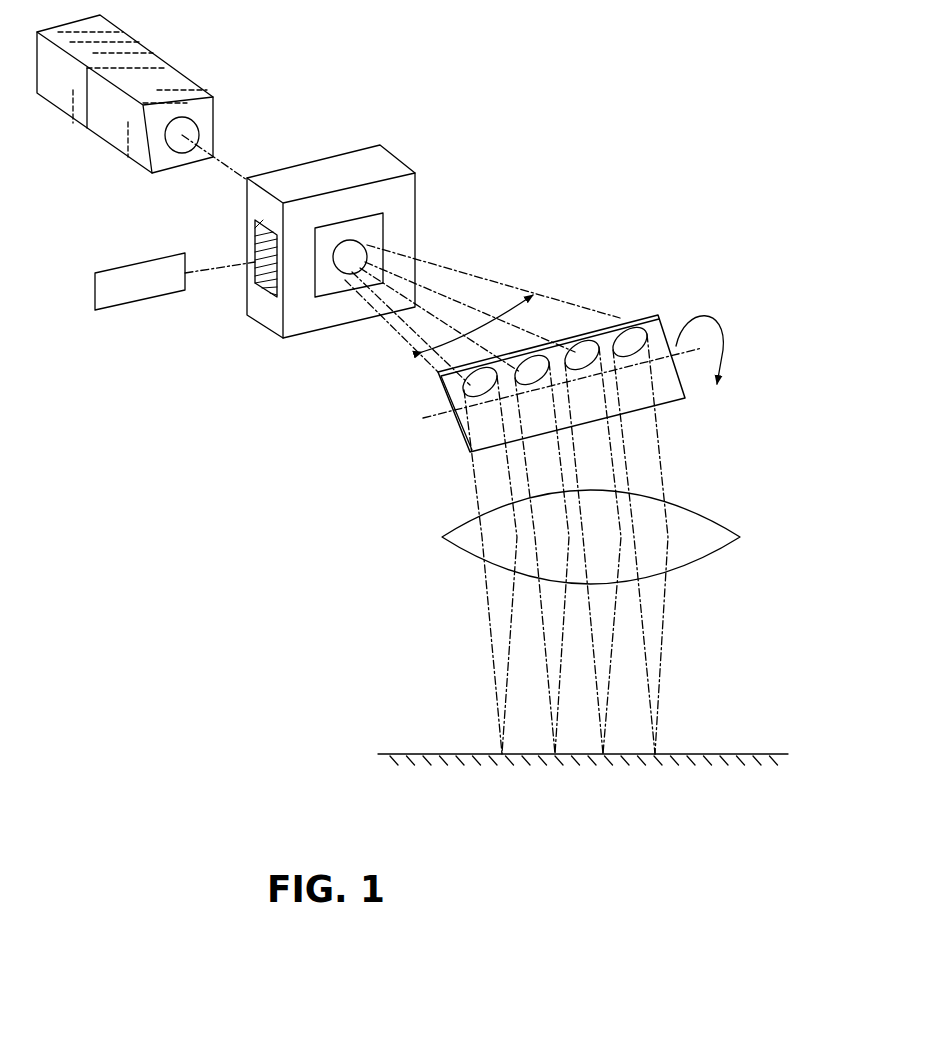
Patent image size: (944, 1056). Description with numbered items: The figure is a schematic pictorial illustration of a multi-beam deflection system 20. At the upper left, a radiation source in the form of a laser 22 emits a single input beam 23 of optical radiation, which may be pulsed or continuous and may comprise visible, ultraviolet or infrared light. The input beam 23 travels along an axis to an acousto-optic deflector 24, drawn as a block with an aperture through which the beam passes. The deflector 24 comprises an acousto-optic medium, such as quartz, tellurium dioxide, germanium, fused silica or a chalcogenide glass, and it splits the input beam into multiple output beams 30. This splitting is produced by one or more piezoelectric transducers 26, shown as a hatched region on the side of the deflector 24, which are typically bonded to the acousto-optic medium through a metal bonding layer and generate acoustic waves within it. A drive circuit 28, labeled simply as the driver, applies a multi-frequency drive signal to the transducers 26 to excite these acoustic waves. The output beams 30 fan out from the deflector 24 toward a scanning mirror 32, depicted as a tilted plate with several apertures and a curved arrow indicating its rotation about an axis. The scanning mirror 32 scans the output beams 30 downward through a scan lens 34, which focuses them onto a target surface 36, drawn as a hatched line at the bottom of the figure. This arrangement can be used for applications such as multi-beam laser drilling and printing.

The multi-beam deflection system 20 is at (509, 106).
The laser 22 is at (157, 67).
The input beam 23 is at (228, 168).
The acousto-optic deflector 24 is at (385, 167).
The piezoelectric transducers 26 is at (265, 285).
The drive circuit 28 is at (123, 305).
The output beams 30 is at (437, 328).
The scanning mirror 32 is at (655, 325).
The scan lens 34 is at (460, 538).
The target surface 36 is at (386, 754).